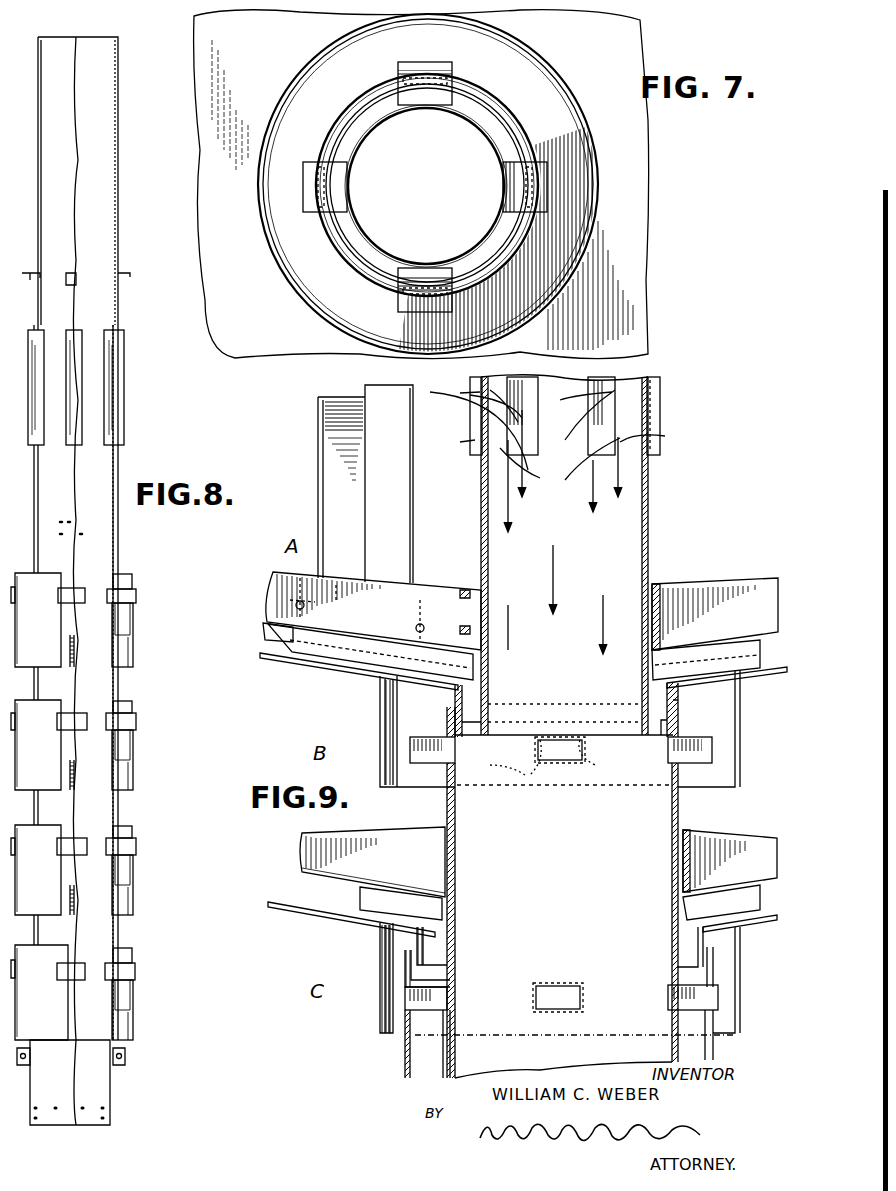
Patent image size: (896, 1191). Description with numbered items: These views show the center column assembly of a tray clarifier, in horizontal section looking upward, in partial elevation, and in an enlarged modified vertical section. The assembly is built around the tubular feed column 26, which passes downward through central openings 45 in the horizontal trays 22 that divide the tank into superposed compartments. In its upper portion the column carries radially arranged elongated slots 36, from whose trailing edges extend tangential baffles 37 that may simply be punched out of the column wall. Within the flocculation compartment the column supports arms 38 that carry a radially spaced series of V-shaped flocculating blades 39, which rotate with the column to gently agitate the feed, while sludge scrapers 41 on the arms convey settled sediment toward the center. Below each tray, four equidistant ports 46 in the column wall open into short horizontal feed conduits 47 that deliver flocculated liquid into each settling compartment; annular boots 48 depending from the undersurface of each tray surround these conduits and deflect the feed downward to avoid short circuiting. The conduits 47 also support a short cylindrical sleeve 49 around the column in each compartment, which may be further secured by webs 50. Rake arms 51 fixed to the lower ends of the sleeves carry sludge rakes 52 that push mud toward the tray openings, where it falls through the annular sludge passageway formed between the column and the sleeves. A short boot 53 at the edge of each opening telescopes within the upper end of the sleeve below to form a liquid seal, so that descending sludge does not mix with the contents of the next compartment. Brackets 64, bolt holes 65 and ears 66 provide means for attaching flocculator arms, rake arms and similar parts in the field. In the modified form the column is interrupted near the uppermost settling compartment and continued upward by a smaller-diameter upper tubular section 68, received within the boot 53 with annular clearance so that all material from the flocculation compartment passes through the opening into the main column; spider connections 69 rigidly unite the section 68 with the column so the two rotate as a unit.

In FIG. 7, the tray 22 is at (648, 232).
In FIG. 9, the tray 22 is at (325, 668).
In FIG. 7, the feed column 26 is at (482, 240).
In FIG. 8, the feed column 26 is at (118, 211).
In FIG. 9, the feed column 26 is at (678, 808).
In FIG. 9, the slots 36 is at (530, 450).
In FIG. 8, the tangentially extending baffles 37 is at (124, 400).
In FIG. 9, the tangentially extending baffles 37 is at (655, 403).
In FIG. 9, the arms 38 is at (275, 602).
In FIG. 9, the flocculating blades 39 is at (412, 522).
In FIG. 9, the sludge scrapers 41 is at (290, 646).
In FIG. 9, the central openings 45 is at (472, 700).
In FIG. 7, the ports 46 is at (340, 196).
In FIG. 8, the ports 46 is at (66, 603).
In FIG. 9, the ports 46 is at (425, 765).
In FIG. 7, the feed conduits 47 is at (452, 68).
In FIG. 8, the feed conduits 47 is at (130, 596).
In FIG. 9, the feed conduits 47 is at (437, 765).
In FIG. 7, the annular boots 48 is at (548, 62).
In FIG. 9, the annular boots 48 is at (380, 718).
In FIG. 7, the cylindrical sleeve 49 is at (332, 258).
In FIG. 8, the cylindrical sleeve 49 is at (131, 578).
In FIG. 9, the cylindrical sleeve 49 is at (405, 1065).
In FIG. 8, the webs 50 is at (120, 663).
In FIG. 9, the rake arms 51 is at (302, 843).
In FIG. 9, the sludge rakes 52 is at (365, 900).
In FIG. 7, the boot 53 is at (362, 108).
In FIG. 9, the boot 53 is at (455, 695).
In FIG. 8, the brackets 64 is at (128, 278).
In FIG. 8, the bolt holes 65 is at (112, 540).
In FIG. 8, the ears 66 is at (125, 1060).
In FIG. 9, the upper tubular section 68 is at (648, 530).
In FIG. 9, the spider connections 69 is at (657, 727).